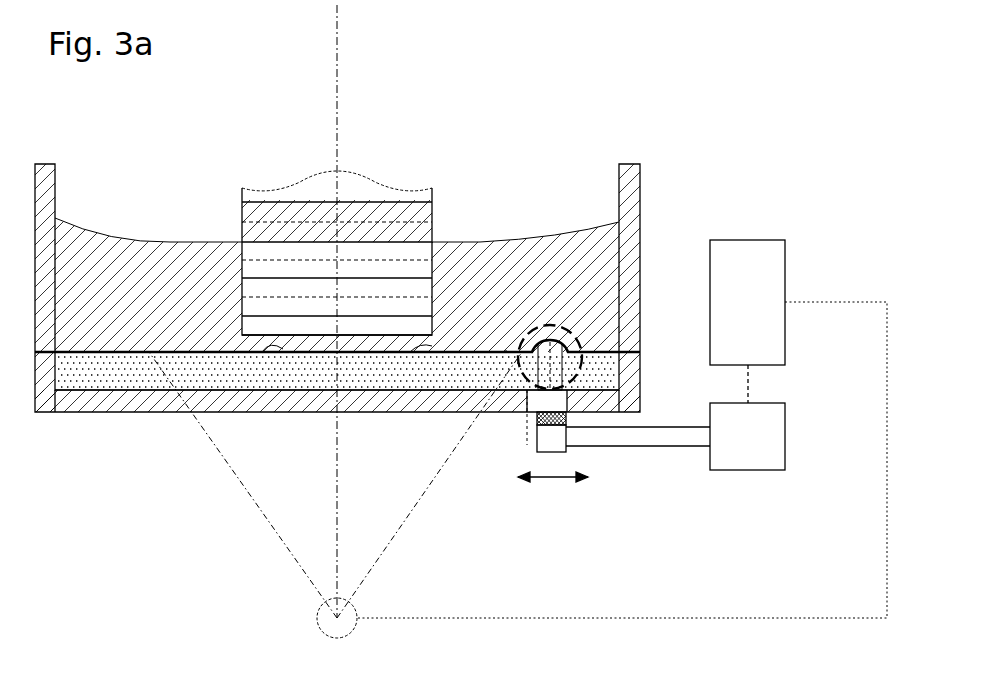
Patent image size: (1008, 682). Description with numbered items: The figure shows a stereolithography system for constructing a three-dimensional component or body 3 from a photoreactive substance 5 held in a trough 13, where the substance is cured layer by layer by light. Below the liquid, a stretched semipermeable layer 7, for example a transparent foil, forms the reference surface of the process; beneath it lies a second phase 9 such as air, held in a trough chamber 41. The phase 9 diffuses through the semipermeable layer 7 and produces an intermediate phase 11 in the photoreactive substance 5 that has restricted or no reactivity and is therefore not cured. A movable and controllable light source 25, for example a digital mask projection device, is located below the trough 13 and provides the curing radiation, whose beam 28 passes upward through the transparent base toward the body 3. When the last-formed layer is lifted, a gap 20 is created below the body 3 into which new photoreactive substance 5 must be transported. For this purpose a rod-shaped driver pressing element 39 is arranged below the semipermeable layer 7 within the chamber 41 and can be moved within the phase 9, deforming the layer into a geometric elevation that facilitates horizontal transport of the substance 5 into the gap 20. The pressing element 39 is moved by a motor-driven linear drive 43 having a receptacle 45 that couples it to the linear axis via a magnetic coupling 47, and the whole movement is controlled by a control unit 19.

The three-dimensional component or body 3 is at (438, 190).
The photoreactive substance 5 is at (600, 283).
The semipermeable layer 7 is at (93, 351).
The second phase 9 is at (425, 378).
The intermediate phase 11 is at (506, 350).
The trough 13 is at (648, 172).
The control unit 19 is at (763, 316).
The gap 20 is at (285, 345).
The light source 25 is at (322, 620).
The light beam edge 28 is at (232, 402).
The pressing element 39 is at (558, 358).
The trough chamber 41 is at (111, 390).
The linear drive 43 is at (763, 456).
The receptacle 45 is at (552, 442).
The magnetic coupling 47 is at (531, 419).